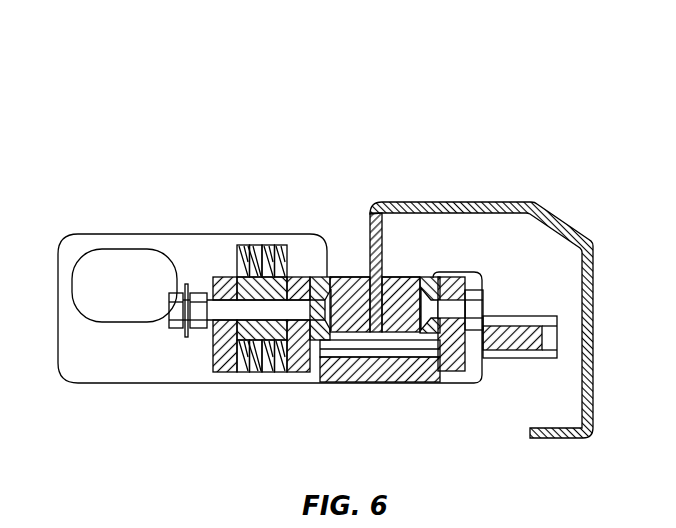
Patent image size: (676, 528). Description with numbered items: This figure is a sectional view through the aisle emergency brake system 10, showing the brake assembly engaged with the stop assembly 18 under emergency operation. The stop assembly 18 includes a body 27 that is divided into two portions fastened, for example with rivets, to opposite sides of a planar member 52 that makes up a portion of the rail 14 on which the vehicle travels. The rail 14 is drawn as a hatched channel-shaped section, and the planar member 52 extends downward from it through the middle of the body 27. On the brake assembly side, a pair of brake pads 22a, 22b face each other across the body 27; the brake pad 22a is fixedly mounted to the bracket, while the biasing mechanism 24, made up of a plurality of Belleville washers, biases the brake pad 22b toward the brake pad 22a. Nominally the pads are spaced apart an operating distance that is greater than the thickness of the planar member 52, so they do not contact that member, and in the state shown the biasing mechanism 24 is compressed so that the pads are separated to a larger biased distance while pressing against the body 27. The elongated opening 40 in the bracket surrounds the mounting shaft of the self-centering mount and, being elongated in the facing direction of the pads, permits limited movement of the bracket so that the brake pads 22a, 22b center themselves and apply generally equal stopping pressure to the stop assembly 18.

The aisle emergency brake system 10 is at (318, 152).
The rail 14 is at (454, 202).
The stop assembly 18 is at (420, 270).
The brake pad 22a is at (418, 343).
The brake pad 22b is at (313, 343).
The biasing mechanism 24 is at (236, 252).
The body 27 is at (346, 276).
The opening 40 is at (118, 250).
The planar member 52 is at (368, 232).